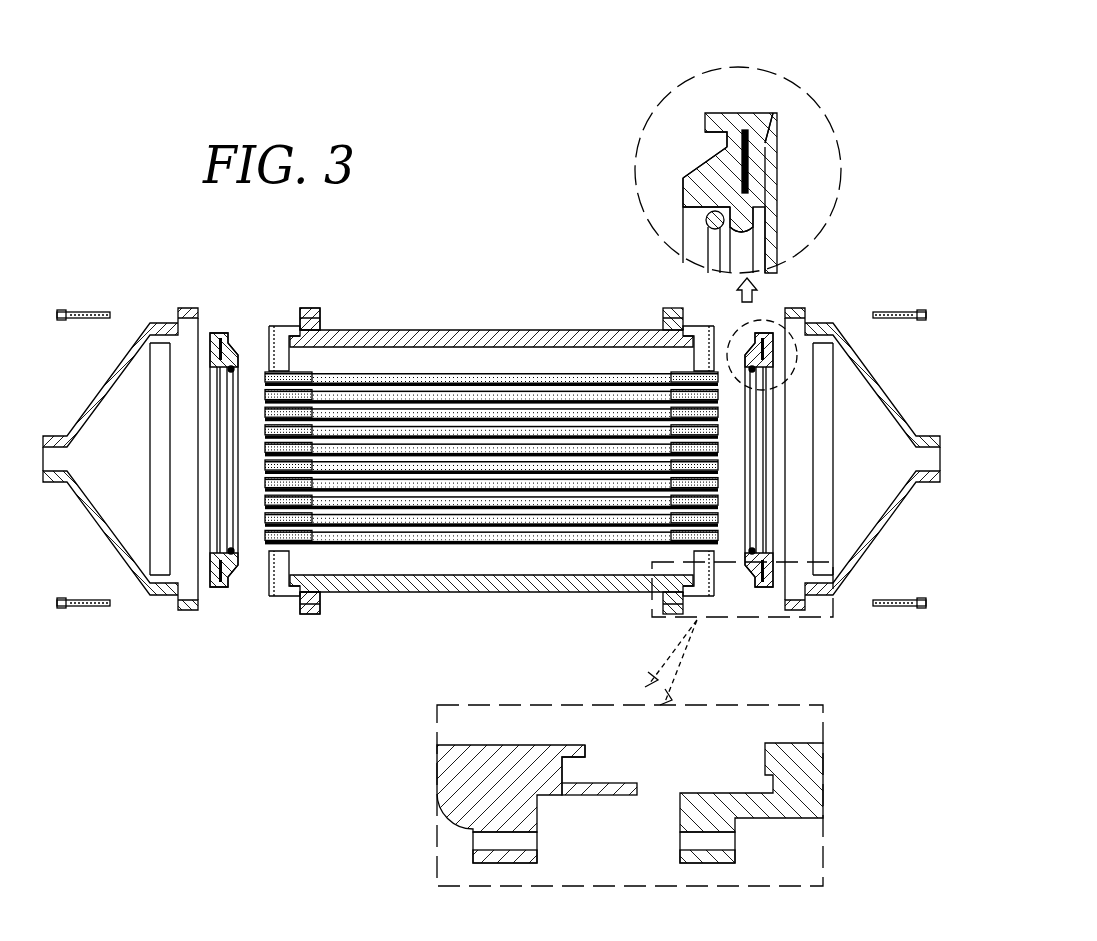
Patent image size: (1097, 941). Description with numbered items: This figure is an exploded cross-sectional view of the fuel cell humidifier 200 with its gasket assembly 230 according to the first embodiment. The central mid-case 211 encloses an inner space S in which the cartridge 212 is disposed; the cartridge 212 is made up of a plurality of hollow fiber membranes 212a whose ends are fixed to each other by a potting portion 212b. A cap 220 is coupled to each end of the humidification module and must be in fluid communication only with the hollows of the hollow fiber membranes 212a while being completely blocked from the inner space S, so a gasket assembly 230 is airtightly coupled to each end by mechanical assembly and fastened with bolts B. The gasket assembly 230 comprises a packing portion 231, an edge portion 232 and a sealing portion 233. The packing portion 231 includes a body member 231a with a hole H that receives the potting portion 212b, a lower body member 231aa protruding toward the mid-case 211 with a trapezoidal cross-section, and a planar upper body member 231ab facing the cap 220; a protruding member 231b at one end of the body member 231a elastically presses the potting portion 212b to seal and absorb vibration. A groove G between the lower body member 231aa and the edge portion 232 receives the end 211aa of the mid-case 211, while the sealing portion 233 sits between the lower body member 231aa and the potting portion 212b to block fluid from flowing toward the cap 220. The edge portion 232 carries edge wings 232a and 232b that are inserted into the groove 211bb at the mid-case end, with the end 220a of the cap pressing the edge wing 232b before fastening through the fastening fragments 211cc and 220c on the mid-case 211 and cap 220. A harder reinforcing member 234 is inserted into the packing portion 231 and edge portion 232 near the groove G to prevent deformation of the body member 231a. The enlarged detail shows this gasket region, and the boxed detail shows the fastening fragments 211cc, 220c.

The fuel cell humidifier 200 is at (508, 282).
The mid-case 211 is at (360, 343).
The inner space S is at (427, 361).
The cartridge 212 is at (412, 658).
The hollow fiber membranes 212a is at (393, 545).
The potting portion 212b is at (312, 585).
The cap 220 is at (105, 385).
The gasket assembly 230 is at (224, 590).
The hole H is at (237, 463).
The bolts B is at (889, 619).
The packing portion 231 is at (916, 194).
The body member 231a is at (757, 190).
The protruding member 231b is at (742, 212).
The lower body member 231aa is at (683, 178).
The upper body member 231ab is at (765, 146).
The edge portion 232 is at (742, 118).
The edge wing 232a is at (705, 118).
The edge wing 232b is at (777, 118).
The sealing portion 233 is at (708, 221).
The reinforcing member 234 is at (752, 170).
The groove G is at (718, 150).
The end of the mid-case 211aa is at (588, 745).
The groove 211bb is at (564, 771).
The fastening fragment 211cc is at (470, 822).
The end of the cap 220a is at (772, 758).
The fastening fragment 220c is at (735, 826).